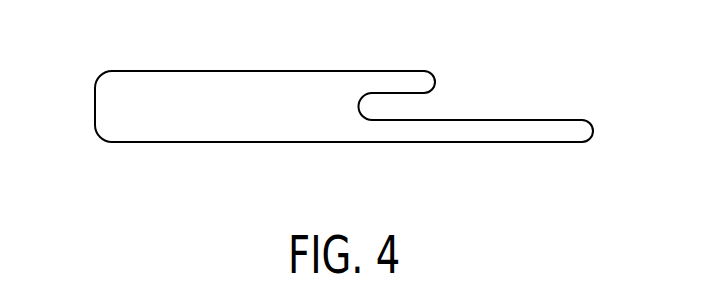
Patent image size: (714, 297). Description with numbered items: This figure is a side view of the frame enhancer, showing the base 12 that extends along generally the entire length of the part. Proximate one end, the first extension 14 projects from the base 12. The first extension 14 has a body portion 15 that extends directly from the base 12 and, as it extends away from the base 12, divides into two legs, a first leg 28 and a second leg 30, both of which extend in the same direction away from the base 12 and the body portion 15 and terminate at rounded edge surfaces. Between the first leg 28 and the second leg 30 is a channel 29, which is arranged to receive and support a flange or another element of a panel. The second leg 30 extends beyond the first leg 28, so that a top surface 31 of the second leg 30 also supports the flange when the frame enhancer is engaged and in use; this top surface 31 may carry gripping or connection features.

The base 12 is at (108, 105).
The first extension 14 is at (157, 130).
The body portion 15 is at (227, 130).
The first leg 28 is at (407, 82).
The channel 29 is at (413, 107).
The second leg 30 is at (545, 130).
The top surface 31 is at (552, 118).